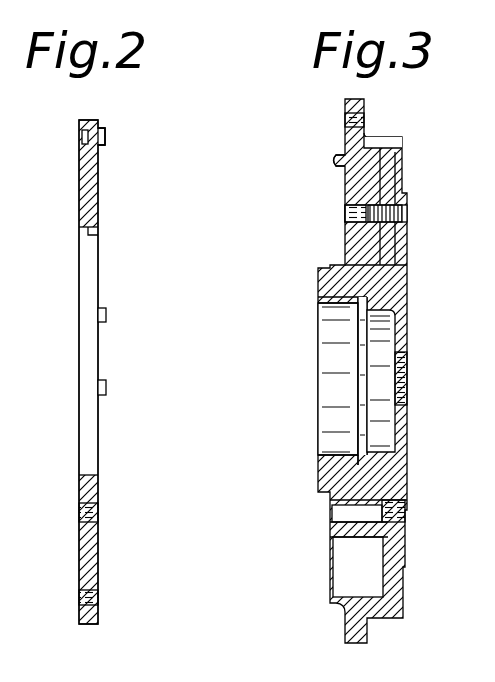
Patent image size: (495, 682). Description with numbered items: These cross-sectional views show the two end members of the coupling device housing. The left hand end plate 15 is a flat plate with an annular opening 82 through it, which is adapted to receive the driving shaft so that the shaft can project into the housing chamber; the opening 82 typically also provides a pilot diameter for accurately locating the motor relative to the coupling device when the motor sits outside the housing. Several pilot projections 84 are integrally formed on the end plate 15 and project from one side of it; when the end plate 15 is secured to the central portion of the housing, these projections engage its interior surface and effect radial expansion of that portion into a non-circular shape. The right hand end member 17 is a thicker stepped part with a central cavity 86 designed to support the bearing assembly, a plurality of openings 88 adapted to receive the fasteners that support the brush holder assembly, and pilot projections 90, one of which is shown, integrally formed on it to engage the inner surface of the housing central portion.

In FIG. 2, the end plate 15 is at (79, 186).
In FIG. 2, the annular opening 82 is at (100, 232).
In FIG. 2, the pilot projections 84 is at (105, 136).
In FIG. 3, the end member 17 is at (395, 172).
In FIG. 3, the central cavity 86 is at (345, 305).
In FIG. 3, the openings 88 is at (402, 212).
In FIG. 3, the pilot projections 90 is at (338, 162).